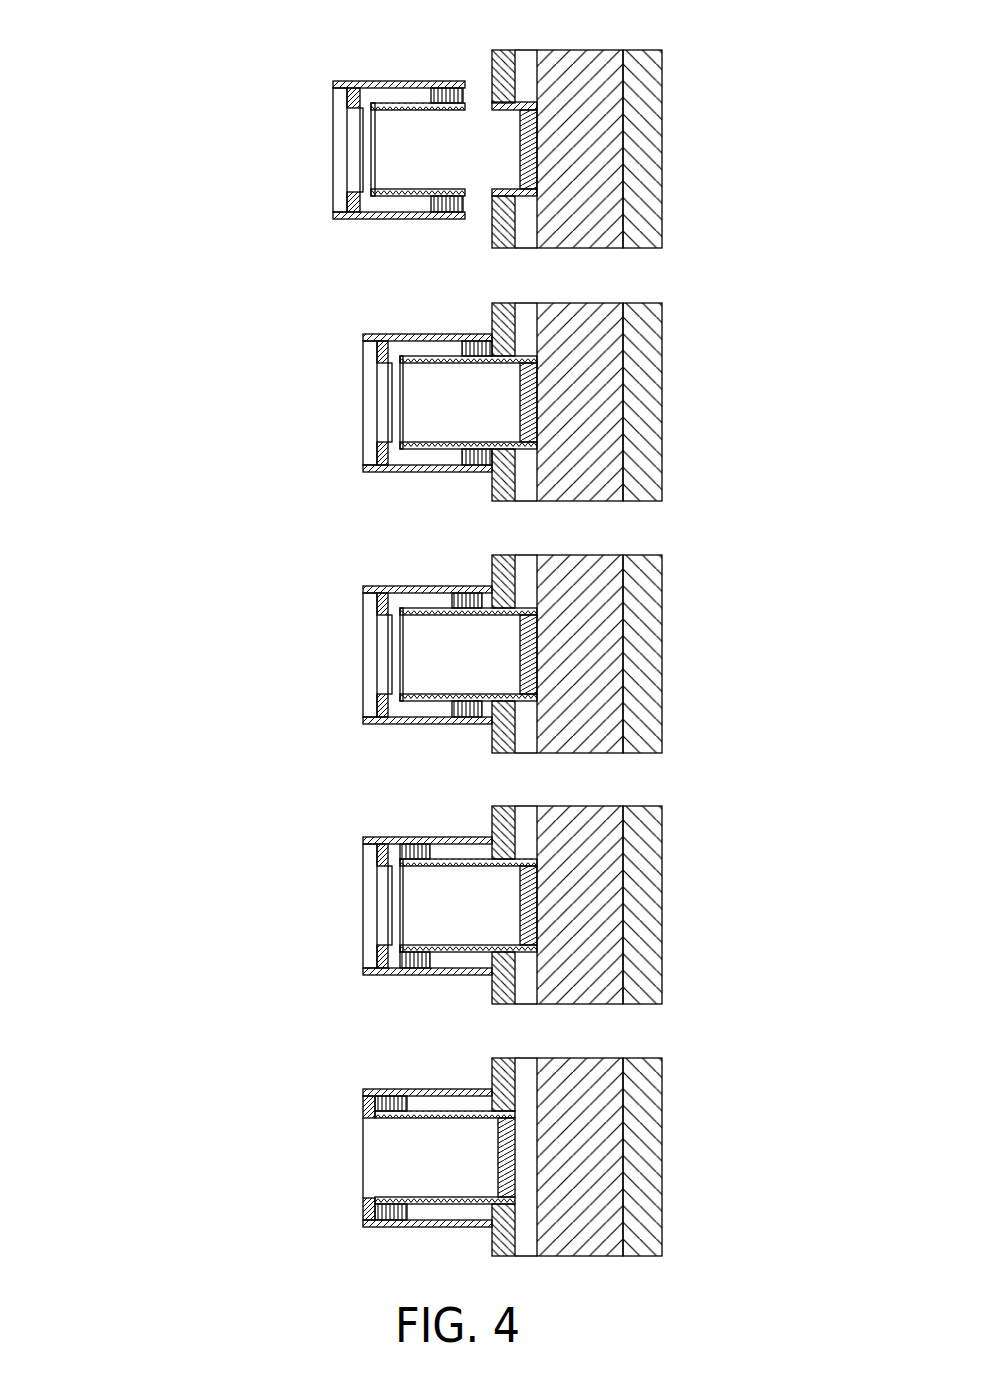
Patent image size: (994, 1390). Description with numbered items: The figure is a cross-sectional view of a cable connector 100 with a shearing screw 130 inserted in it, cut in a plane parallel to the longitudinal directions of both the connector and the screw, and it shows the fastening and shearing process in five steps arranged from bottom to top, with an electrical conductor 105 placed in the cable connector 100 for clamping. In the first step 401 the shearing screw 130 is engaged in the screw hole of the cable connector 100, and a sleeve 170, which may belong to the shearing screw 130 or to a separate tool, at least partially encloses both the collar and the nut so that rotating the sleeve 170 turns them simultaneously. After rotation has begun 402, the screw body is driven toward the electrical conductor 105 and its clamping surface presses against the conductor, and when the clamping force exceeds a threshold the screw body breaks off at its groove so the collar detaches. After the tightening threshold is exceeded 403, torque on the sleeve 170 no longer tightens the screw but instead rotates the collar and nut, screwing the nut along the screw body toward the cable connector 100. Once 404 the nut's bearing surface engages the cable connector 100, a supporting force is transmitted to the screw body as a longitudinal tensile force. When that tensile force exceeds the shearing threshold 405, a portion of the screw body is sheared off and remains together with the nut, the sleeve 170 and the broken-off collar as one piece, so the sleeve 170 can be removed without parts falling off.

The cable connector 100 is at (653, 1171).
The electrical conductor 105 is at (676, 1176).
The shearing screw 130 is at (386, 1153).
The sleeve 170 is at (444, 1086).
The first step 401 is at (441, 1146).
The rotation begun step 402 is at (177, 848).
The threshold exceeded step 403 is at (177, 562).
The nut engagement step 404 is at (183, 317).
The shearing step 405 is at (173, 98).